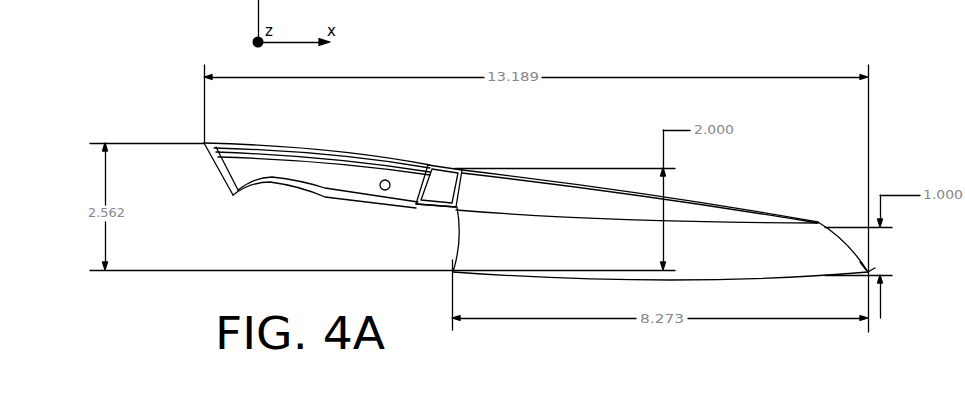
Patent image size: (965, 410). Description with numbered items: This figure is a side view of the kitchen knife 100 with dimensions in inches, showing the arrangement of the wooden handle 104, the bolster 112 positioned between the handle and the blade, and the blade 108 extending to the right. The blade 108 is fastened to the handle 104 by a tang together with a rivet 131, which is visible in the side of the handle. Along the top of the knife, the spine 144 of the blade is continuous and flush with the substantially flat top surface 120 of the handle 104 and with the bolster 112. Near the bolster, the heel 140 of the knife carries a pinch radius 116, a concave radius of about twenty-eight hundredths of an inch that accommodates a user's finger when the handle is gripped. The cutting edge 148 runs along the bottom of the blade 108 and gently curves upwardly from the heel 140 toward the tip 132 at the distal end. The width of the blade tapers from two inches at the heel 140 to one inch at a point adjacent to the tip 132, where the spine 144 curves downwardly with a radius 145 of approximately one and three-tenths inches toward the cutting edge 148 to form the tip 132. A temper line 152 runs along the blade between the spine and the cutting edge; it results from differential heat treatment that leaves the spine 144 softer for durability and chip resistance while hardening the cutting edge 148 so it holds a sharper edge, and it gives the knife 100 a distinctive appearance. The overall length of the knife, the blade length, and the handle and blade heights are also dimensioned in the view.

The kitchen knife 100 is at (790, 150).
The wooden handle 104 is at (305, 173).
The blade 108 is at (733, 200).
The bolster 112 is at (453, 168).
The pinch radius 116 is at (460, 212).
The substantially flat top surface 120 is at (392, 162).
The rivet 131 is at (332, 192).
The tip 132 is at (874, 272).
The heel 140 is at (430, 224).
The spine 144 is at (680, 197).
The radius 145 is at (810, 230).
The cutting edge 148 is at (713, 283).
The temper line 152 is at (562, 218).